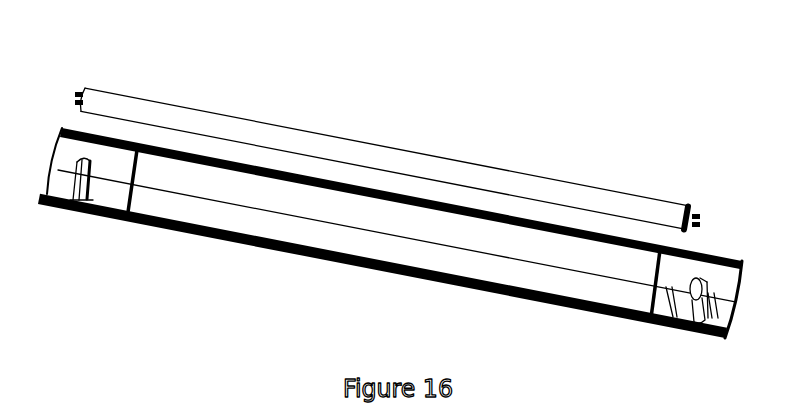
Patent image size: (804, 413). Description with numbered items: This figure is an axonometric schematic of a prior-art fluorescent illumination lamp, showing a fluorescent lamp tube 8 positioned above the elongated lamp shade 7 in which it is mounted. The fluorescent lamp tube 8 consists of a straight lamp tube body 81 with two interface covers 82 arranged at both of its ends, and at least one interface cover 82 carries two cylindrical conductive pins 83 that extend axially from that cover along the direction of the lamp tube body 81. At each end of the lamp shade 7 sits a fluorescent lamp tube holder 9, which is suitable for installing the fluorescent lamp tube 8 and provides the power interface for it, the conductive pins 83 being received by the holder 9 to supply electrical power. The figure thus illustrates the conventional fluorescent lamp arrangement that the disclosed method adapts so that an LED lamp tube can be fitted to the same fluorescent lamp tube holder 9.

The lamp shade 7 is at (308, 235).
The fluorescent lamp tube 8 is at (391, 128).
The lamp tube body 81 is at (380, 158).
The interface cover 82 is at (86, 88).
The cylindrical conductive pin 83 is at (77, 96).
The fluorescent lamp tube holder 9 is at (97, 181).